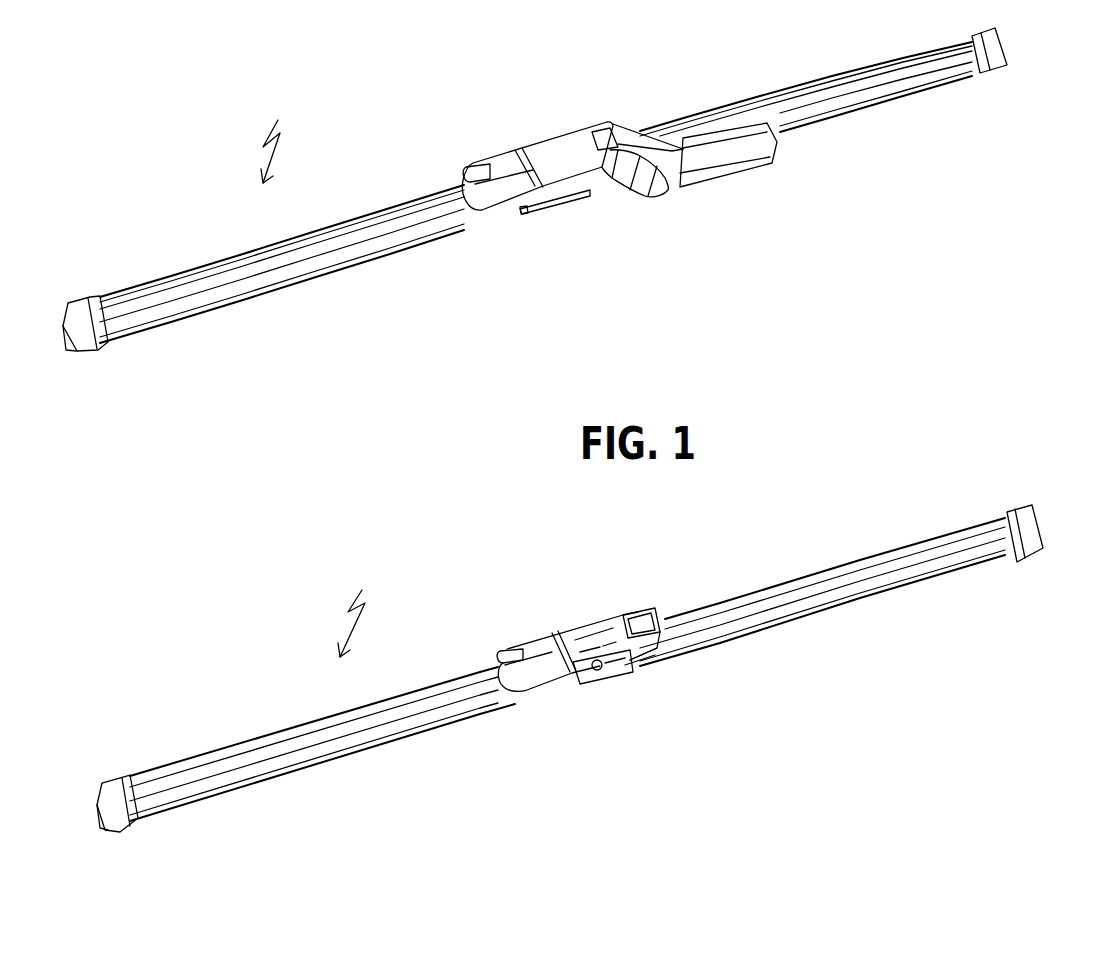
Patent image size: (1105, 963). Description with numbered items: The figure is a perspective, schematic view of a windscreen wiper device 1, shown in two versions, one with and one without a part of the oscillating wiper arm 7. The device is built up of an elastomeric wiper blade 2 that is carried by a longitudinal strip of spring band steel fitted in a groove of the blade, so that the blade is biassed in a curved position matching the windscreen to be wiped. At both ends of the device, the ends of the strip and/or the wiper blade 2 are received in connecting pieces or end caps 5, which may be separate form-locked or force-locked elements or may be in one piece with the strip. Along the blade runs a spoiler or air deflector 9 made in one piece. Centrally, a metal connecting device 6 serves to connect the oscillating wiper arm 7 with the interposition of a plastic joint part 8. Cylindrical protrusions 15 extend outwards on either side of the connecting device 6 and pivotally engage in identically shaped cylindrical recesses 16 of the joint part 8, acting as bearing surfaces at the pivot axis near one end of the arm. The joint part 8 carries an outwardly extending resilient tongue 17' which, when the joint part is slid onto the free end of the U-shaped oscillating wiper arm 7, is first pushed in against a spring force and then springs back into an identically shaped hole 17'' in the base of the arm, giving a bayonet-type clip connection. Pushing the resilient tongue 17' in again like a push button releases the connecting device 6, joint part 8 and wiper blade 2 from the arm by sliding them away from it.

The windscreen wiper device 1 is at (400, 576).
The wiper blade 2 is at (275, 290).
The end caps 5 is at (90, 332).
The connecting device 6 is at (623, 670).
The oscillating wiper arm 7 is at (730, 167).
The joint part 8 is at (608, 630).
The spoiler 9 is at (356, 232).
The cylindrical protrusions 15 is at (597, 680).
The cylindrical recesses 16 is at (556, 633).
The resilient tongue 17' is at (655, 355).
The hole 17'' is at (586, 231).